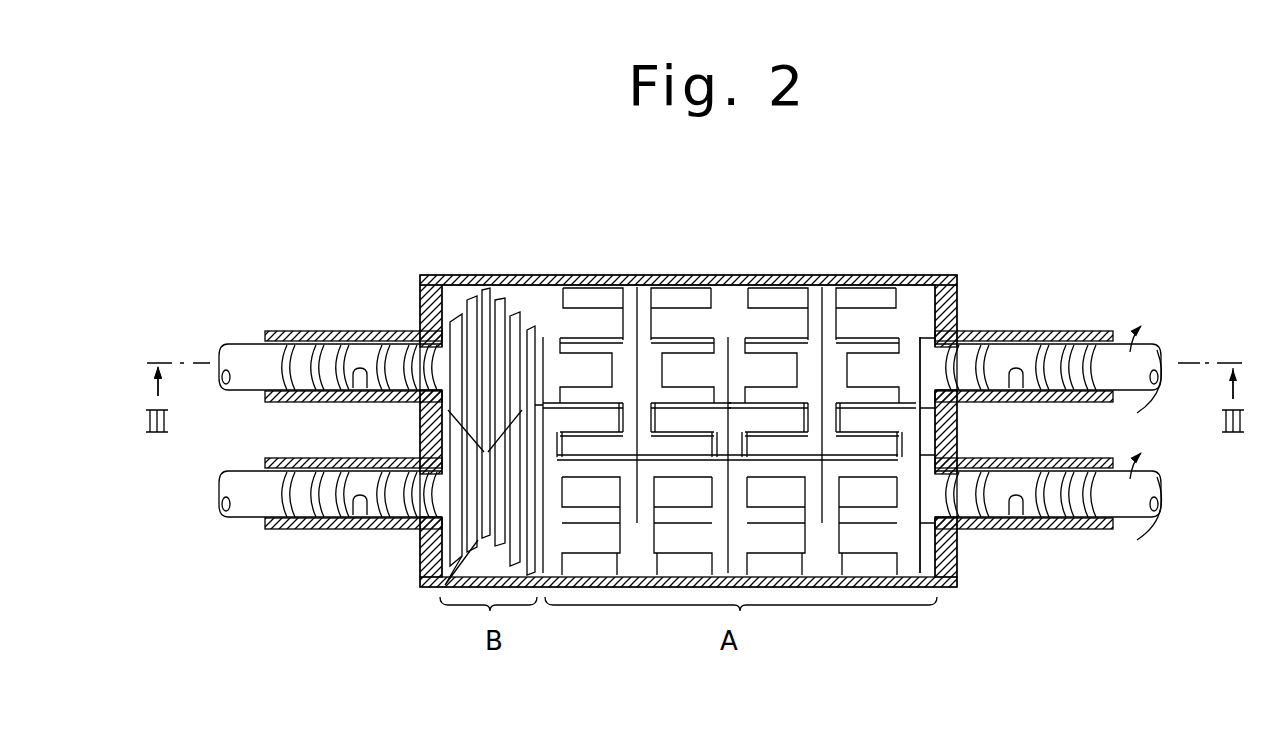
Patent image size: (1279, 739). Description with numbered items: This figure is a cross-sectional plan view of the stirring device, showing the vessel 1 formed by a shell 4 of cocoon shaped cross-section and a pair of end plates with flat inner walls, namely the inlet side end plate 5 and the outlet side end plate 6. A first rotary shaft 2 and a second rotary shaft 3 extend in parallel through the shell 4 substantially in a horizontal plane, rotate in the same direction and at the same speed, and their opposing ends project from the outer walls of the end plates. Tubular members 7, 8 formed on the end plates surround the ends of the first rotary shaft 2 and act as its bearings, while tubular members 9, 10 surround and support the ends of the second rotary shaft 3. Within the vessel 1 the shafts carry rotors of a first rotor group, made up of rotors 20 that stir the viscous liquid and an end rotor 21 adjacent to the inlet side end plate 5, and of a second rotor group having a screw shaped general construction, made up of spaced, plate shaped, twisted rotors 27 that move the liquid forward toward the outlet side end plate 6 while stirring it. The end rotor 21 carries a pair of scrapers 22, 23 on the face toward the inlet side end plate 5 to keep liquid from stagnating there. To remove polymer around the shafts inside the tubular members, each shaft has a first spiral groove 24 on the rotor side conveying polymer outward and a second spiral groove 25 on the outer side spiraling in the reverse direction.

The vessel 1 is at (916, 277).
The first rotary shaft 2 is at (1150, 346).
The second rotary shaft 3 is at (1145, 493).
The shell 4 is at (460, 276).
The inlet side end plate 5 is at (962, 287).
The outlet side end plate 6 is at (417, 288).
The tubular member 7 is at (1035, 350).
The tubular member 8 is at (345, 352).
The tubular member 9 is at (1030, 528).
The tubular member 10 is at (352, 528).
The rotor 20 is at (598, 500).
The end rotor 21 is at (862, 497).
The scraper 22 is at (955, 408).
The scraper 23 is at (936, 298).
The first spiral groove 24 is at (395, 333).
The second spiral groove 25 is at (310, 350).
The rotor 27 is at (500, 285).